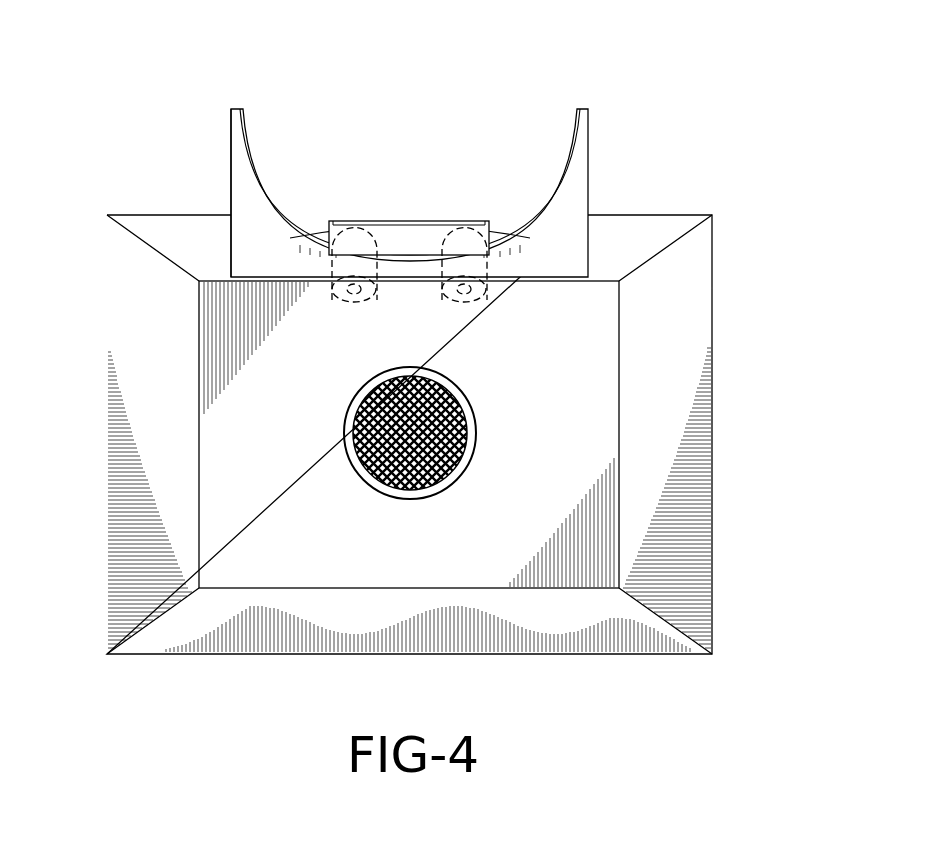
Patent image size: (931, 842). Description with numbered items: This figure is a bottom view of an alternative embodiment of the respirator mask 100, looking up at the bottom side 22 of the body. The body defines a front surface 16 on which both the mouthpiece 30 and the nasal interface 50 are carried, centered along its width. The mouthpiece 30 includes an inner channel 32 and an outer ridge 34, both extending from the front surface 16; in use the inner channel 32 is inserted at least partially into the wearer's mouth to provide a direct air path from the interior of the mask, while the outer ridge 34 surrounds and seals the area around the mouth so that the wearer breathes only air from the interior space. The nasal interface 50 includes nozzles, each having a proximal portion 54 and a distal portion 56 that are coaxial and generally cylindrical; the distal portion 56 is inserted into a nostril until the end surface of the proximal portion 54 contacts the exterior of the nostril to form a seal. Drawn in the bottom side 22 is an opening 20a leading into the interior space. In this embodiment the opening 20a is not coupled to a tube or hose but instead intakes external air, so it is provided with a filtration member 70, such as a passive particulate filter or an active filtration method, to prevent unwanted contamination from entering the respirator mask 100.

The respirator mask 100 is at (722, 118).
The front surface 16 is at (168, 232).
The bottom side 22 is at (244, 447).
The opening 20a is at (405, 510).
The filtration member 70 is at (462, 450).
The mouthpiece 30 is at (565, 142).
The outer ridge 34 is at (231, 155).
The inner channel 32 is at (418, 240).
The nasal interface 50 is at (450, 185).
The distal portion 56 is at (354, 228).
The proximal portion 54 is at (360, 302).